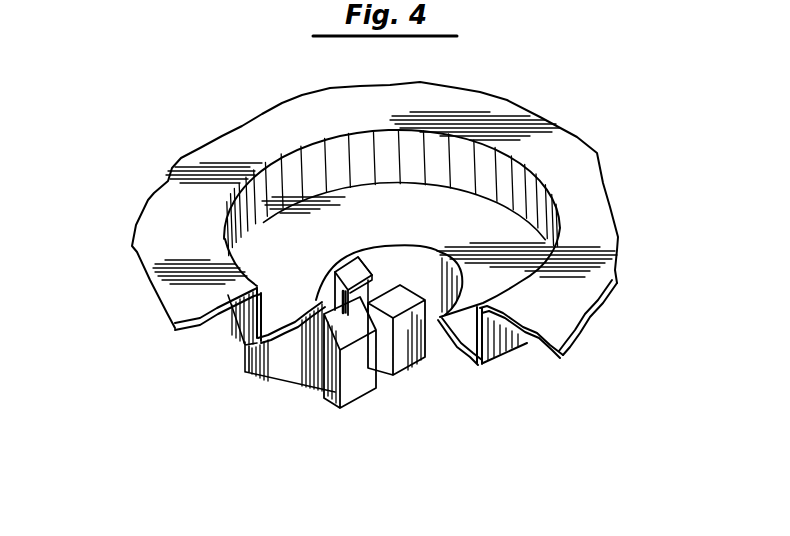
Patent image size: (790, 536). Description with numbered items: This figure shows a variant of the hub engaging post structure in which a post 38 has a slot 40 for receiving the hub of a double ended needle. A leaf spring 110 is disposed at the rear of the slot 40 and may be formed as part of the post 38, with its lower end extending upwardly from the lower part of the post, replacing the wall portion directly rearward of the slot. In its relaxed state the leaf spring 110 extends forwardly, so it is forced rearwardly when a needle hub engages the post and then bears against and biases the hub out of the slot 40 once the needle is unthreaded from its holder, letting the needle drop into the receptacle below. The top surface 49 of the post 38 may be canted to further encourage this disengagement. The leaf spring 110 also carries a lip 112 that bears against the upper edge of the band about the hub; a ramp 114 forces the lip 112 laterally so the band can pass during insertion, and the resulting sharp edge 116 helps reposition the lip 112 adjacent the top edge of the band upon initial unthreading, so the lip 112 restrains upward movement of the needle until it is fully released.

The post 38 is at (418, 360).
The slot 40 is at (383, 338).
The top surface 49 is at (345, 328).
The leaf spring 110 is at (349, 262).
The lip 112 is at (341, 263).
The ramp 114 is at (366, 256).
The sharp edge 116 is at (373, 287).